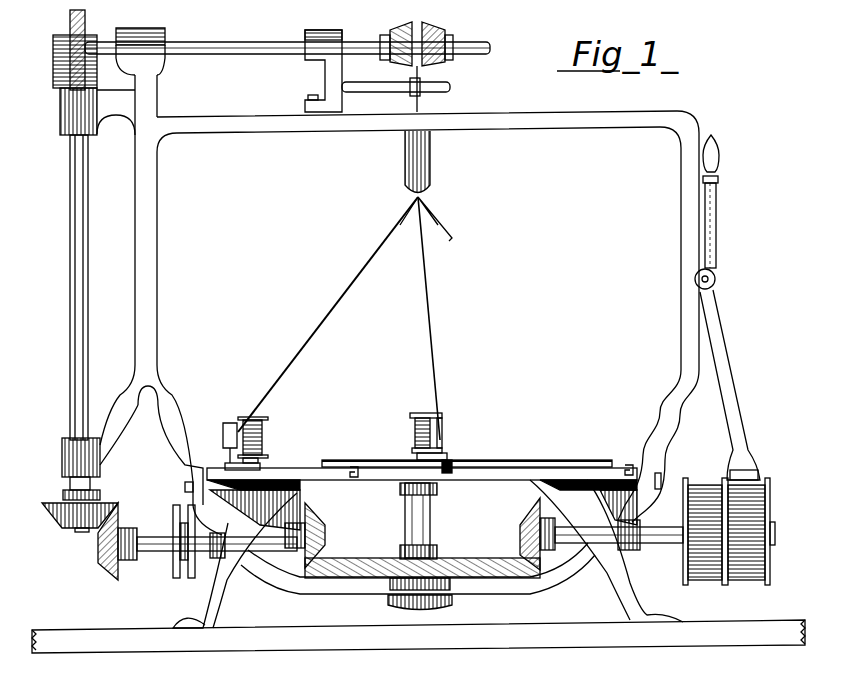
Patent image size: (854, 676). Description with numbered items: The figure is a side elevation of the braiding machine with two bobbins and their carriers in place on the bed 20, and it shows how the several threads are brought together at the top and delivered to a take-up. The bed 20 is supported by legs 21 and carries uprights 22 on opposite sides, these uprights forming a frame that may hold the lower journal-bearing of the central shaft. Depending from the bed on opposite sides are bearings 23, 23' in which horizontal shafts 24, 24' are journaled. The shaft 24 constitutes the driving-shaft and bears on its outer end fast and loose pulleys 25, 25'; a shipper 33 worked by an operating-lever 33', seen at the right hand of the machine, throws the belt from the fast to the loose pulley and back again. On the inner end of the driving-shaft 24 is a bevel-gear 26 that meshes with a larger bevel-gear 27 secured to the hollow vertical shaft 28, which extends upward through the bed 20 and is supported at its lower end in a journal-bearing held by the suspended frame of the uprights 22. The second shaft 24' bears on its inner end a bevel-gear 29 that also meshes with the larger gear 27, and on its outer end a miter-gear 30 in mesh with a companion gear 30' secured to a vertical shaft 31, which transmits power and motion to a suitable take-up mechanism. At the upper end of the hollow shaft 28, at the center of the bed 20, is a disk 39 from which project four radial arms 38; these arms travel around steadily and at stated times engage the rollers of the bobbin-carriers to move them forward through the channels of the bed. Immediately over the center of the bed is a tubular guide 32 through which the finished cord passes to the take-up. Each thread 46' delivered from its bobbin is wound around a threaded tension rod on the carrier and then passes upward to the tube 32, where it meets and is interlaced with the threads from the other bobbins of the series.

The bed 20 is at (287, 473).
The legs 21 is at (428, 554).
The uprights 22 is at (157, 326).
The bearing 23 is at (634, 544).
The bearing 23' is at (197, 554).
The driving-shaft 24 is at (619, 524).
The horizontal shaft 24' is at (217, 532).
The fast pulley 25 is at (751, 541).
The loose pulley 25' is at (705, 541).
The bevel-gear 26 is at (523, 512).
The bevel-gear 27 is at (487, 556).
The hollow vertical shaft 28 is at (430, 513).
The bevel-gear 29 is at (318, 521).
The miter-gear 30 is at (109, 550).
The companion gear 30' is at (61, 523).
The vertical shaft 31 is at (76, 360).
The tubular guide 32 is at (430, 165).
The shipper 33 is at (736, 374).
The operating-lever 33' is at (727, 201).
The arms 38 is at (577, 456).
The disk 39 is at (408, 463).
The thread 46' is at (356, 318).